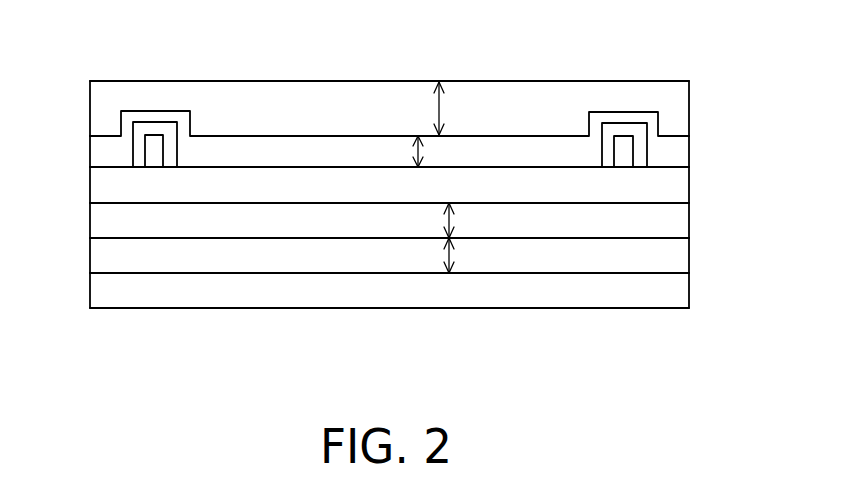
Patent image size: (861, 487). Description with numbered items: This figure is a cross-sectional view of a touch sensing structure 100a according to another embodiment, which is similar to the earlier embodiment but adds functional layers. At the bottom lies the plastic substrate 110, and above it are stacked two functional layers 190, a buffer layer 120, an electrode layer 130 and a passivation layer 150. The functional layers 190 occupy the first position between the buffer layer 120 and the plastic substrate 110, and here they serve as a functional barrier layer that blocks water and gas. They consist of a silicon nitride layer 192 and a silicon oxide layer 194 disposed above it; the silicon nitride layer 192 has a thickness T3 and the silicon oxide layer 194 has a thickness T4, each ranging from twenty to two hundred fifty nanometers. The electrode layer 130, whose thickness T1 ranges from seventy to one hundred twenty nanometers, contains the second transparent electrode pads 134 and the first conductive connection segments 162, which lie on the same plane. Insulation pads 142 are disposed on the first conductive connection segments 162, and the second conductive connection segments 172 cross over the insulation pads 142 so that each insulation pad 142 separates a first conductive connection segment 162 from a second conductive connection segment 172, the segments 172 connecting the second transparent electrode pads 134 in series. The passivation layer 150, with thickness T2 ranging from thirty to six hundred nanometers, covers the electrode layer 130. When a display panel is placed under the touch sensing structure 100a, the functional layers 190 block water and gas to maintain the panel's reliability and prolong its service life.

The touch sensing structure 100a is at (740, 380).
The plastic substrate 110 is at (663, 291).
The buffer layer 120 is at (663, 185).
The electrode layer 130 is at (82, 148).
The second transparent electrode pads 134 is at (340, 150).
The insulation pads 142 is at (155, 128).
The passivation layer 150 is at (673, 96).
The first conductive connection segments 162 is at (157, 157).
The second conductive connection segments 172 is at (139, 115).
The functional layer 190 is at (450, 238).
The silicon nitride layer 192 is at (663, 256).
The silicon oxide layer 194 is at (663, 221).
The thickness of the electrode layer T1 is at (415, 148).
The thickness of the passivation layer T2 is at (441, 107).
The thickness of the silicon nitride layer T3 is at (449, 254).
The thickness of the silicon oxide layer T4 is at (449, 221).